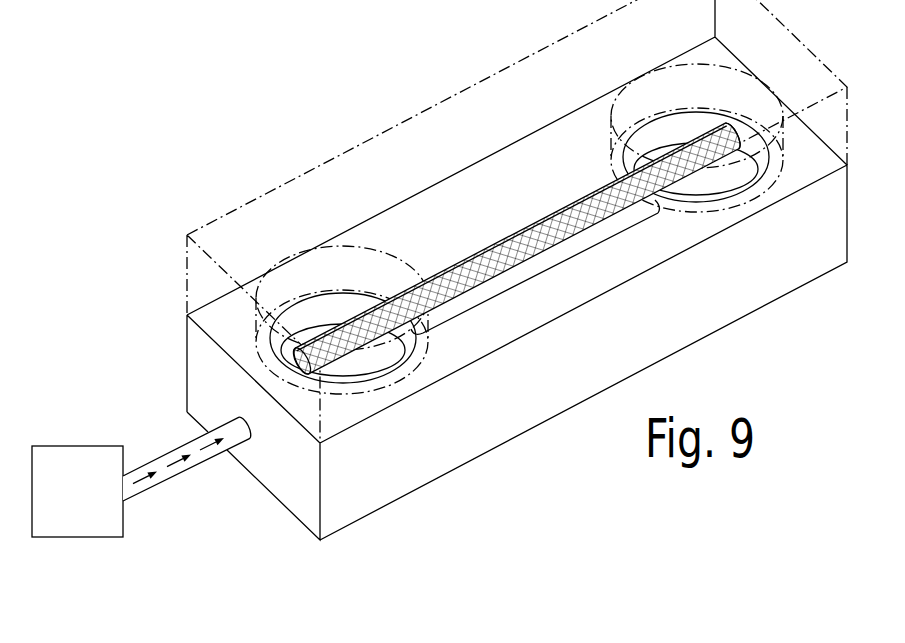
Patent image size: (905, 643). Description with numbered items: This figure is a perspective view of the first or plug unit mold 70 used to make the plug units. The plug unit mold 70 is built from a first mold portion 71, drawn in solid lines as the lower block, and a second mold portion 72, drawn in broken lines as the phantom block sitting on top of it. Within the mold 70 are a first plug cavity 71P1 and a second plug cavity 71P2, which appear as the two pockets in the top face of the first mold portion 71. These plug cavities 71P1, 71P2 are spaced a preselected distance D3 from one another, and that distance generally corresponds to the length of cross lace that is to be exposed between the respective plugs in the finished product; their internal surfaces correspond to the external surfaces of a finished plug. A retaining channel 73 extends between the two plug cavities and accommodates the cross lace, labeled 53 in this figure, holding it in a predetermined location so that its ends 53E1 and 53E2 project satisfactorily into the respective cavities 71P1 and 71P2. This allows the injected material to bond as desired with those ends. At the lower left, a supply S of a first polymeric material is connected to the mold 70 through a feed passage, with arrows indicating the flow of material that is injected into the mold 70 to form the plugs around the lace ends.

The plug unit mold 70 is at (459, 270).
The first mold portion 71 is at (170, 372).
The second mold portion 72 is at (175, 269).
The first plug cavity 71P1 is at (365, 383).
The second plug cavity 71P2 is at (703, 204).
The cylindrical body 53 is at (515, 224).
The retaining channel 73 is at (493, 246).
The first end 53E1 is at (317, 343).
The second end 53E2 is at (713, 131).
The preselected distance D3 is at (547, 271).
The supply S is at (141, 477).